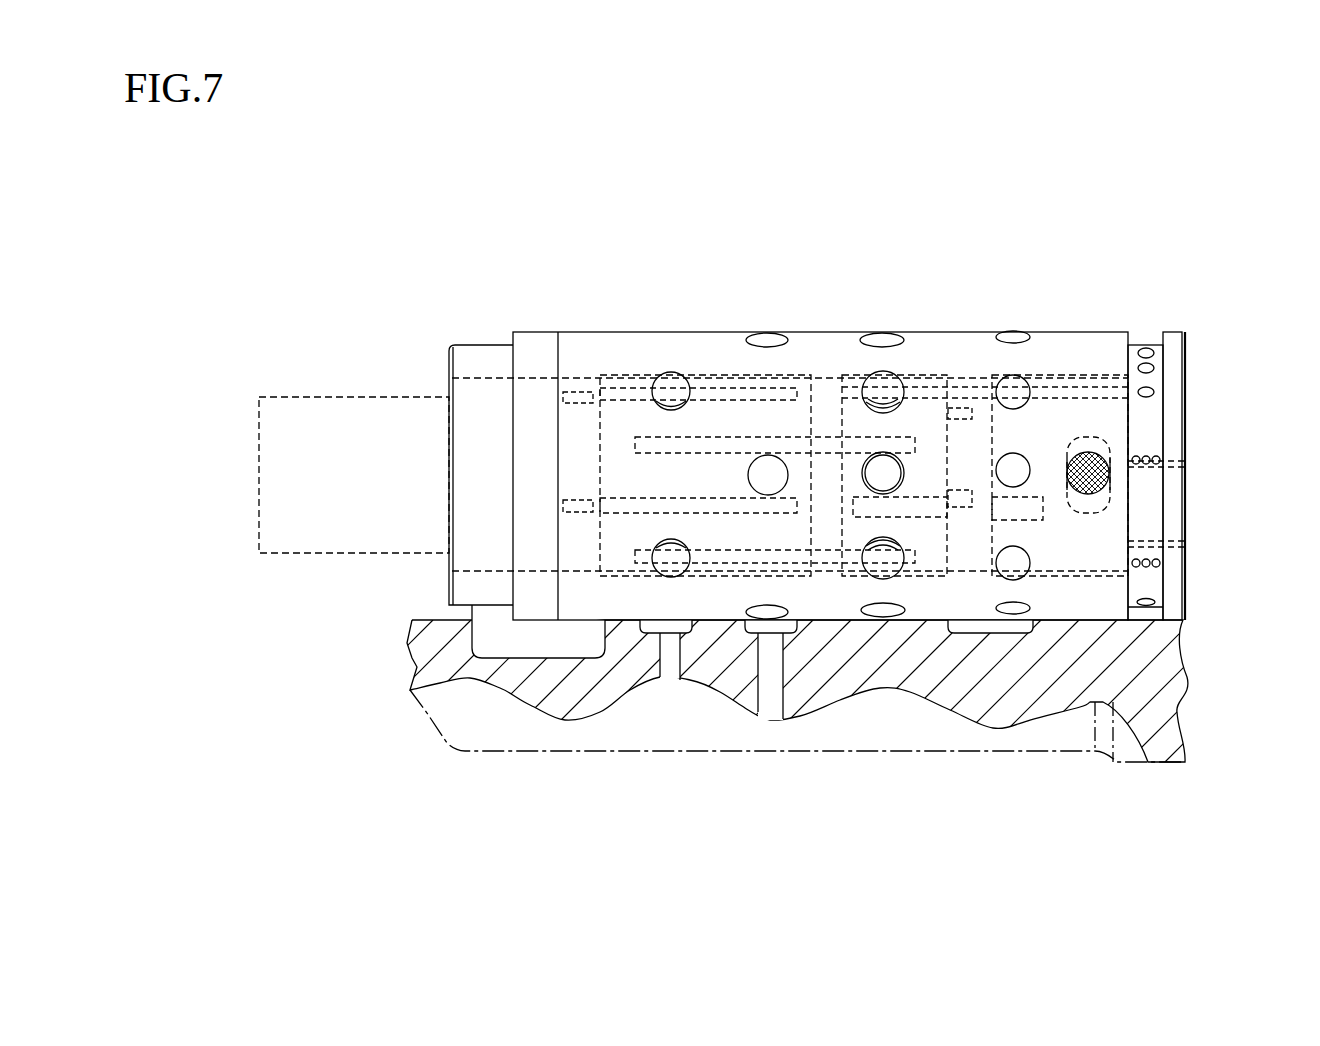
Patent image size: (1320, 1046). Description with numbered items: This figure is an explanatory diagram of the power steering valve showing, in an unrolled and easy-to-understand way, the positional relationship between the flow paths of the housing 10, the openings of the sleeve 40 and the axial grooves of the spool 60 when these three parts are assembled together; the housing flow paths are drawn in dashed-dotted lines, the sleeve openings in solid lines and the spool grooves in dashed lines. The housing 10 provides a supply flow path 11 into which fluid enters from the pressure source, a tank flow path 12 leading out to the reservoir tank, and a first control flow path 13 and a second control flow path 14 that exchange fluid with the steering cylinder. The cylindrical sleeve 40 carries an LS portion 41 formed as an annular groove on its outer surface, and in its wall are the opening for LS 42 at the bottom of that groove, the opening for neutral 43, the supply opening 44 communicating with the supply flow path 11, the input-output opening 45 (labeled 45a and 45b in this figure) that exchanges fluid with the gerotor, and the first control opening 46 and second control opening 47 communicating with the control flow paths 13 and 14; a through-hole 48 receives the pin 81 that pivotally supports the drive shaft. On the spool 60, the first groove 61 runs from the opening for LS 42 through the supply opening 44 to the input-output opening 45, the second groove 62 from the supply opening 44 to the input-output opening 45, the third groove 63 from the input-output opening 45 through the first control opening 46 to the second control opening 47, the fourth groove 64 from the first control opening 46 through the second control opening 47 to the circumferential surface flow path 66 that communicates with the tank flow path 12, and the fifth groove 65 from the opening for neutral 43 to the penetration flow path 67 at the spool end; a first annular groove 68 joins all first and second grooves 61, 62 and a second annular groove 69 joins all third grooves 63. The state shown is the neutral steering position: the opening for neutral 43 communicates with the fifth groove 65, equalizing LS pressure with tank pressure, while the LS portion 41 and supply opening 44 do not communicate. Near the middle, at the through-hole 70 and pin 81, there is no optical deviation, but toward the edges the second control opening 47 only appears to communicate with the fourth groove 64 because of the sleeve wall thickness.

The housing 10 is at (437, 667).
The supply flow path 11 is at (993, 630).
The tank flow path 12 is at (532, 650).
The first control flow path 13 is at (773, 627).
The second control flow path 14 is at (665, 623).
The sleeve 40 is at (485, 348).
The LS portion 41 is at (1145, 332).
The opening for LS 42 is at (1153, 390).
The opening for neutral 43 is at (1138, 457).
The supply opening 44 is at (1018, 606).
The input-output opening 45 is at (959, 405).
The hole 45a is at (880, 555).
The hole 45b is at (886, 608).
The first control opening 46 is at (762, 612).
The second control opening 47 is at (673, 560).
The through-hole 48 is at (1112, 487).
The spool 60 is at (360, 412).
The first groove 61 is at (1090, 375).
The second groove 62 is at (925, 578).
The third groove 63 is at (800, 375).
The fourth groove 64 is at (575, 503).
The fifth groove 65 is at (1160, 472).
The circumferential surface flow path 66 is at (498, 578).
The penetration flow path 67 is at (1190, 462).
The first annular groove 68 is at (963, 385).
The second annular groove 69 is at (823, 578).
The through-hole 70 is at (1088, 513).
The pin 81 is at (1102, 455).